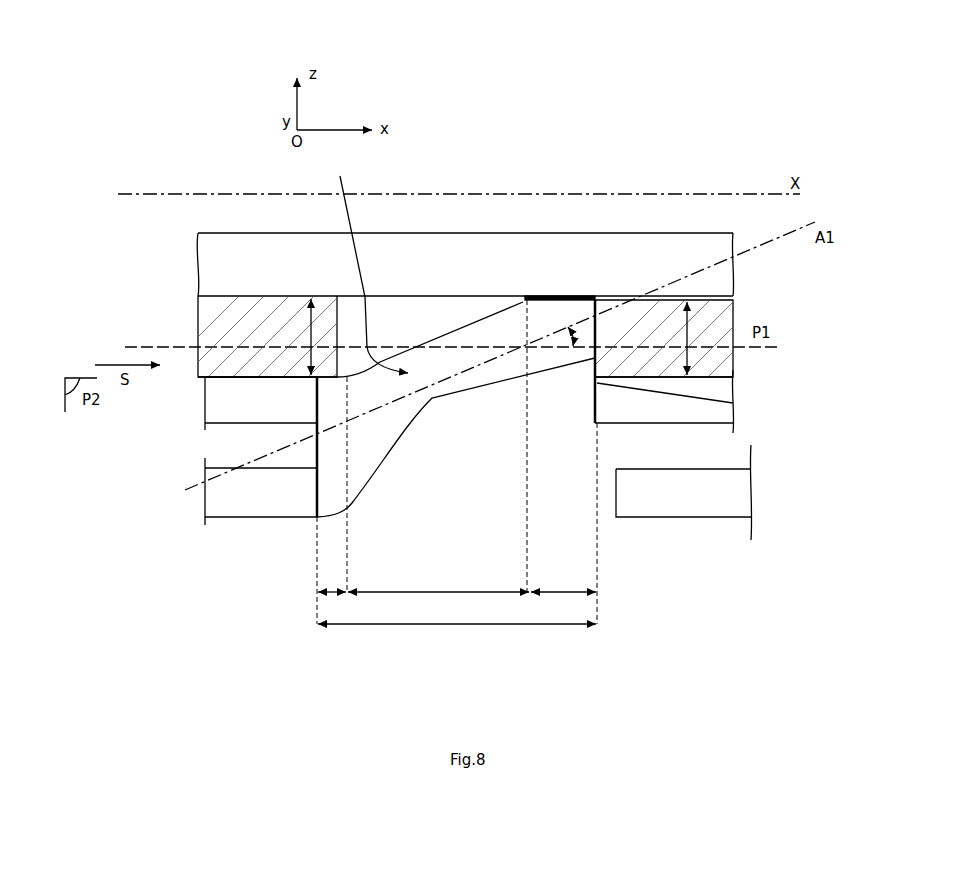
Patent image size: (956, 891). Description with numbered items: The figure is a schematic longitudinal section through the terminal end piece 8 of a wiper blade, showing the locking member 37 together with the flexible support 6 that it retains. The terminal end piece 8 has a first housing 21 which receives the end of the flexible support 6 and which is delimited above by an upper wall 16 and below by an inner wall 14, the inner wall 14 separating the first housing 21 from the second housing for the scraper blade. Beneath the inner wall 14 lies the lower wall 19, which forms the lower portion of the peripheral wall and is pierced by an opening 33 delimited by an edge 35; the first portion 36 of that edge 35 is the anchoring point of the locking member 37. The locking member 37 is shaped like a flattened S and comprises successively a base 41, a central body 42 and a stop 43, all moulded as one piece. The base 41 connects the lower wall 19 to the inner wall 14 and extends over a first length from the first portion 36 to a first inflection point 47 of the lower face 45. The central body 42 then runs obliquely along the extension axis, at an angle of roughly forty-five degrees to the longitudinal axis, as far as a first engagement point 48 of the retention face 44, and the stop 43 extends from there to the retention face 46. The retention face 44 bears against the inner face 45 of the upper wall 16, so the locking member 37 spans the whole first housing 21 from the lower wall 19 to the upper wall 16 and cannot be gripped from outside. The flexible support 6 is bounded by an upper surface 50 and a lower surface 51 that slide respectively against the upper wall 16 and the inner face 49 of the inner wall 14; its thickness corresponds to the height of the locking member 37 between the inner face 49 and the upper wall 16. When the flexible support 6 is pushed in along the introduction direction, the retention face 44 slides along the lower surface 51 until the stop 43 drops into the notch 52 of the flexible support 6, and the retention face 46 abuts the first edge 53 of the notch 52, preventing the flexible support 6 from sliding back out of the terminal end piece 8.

The terminal end piece 8 is at (250, 150).
The upper wall 16 is at (194, 263).
The flexible support 6 is at (220, 336).
The inner face of the inner wall 49 is at (287, 377).
The inner wall 14 is at (194, 400).
The lower wall 19 is at (197, 492).
The first housing 21 is at (430, 339).
The first engagement point 48 is at (523, 302).
The notch 52 is at (384, 313).
The inner face of the upper wall 45 is at (485, 297).
The retention face 44 is at (560, 296).
The retention face 46 is at (598, 328).
The upper surface 50 is at (722, 297).
The lower surface 51 is at (703, 378).
The first edge 53 is at (585, 379).
The first portion 36 is at (317, 518).
The base 41 is at (337, 465).
The first inflection point 47 is at (347, 510).
The locking member 37 is at (400, 477).
The central body 42 is at (428, 396).
The opening 33 is at (509, 497).
The stop 43 is at (555, 338).
The edge 35 is at (616, 497).